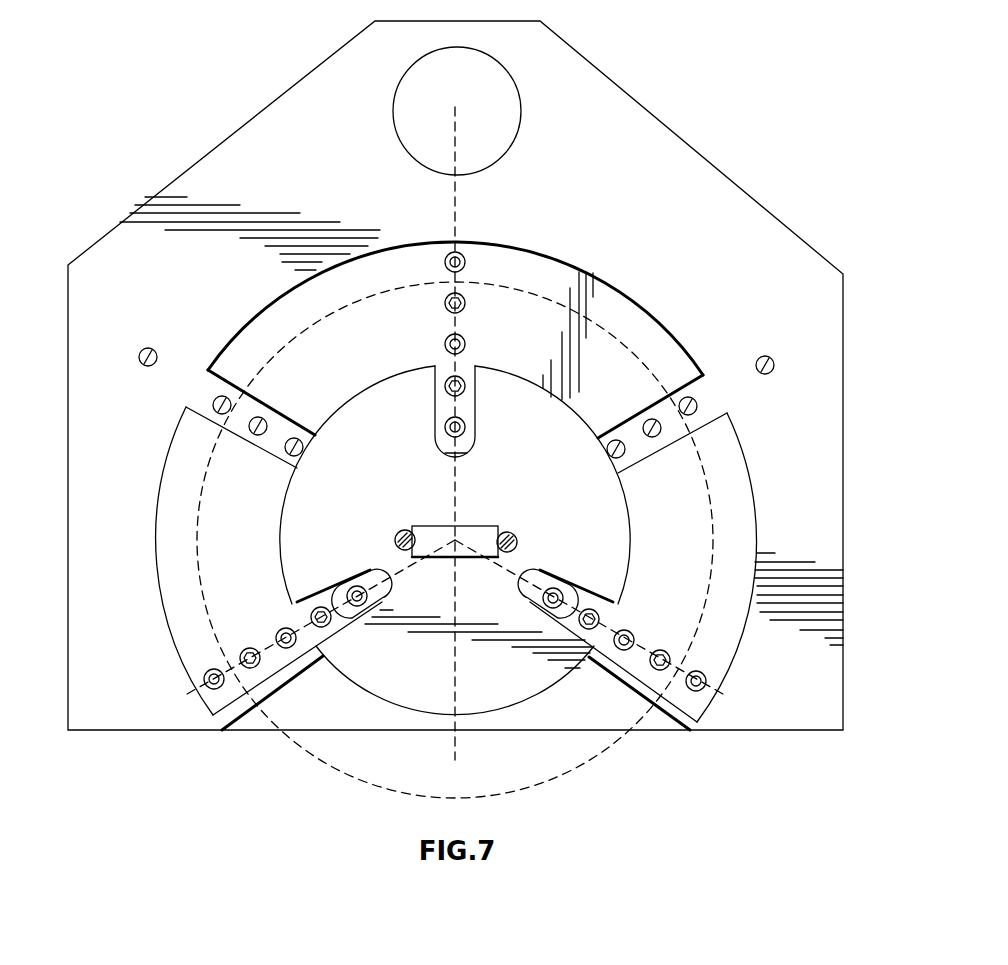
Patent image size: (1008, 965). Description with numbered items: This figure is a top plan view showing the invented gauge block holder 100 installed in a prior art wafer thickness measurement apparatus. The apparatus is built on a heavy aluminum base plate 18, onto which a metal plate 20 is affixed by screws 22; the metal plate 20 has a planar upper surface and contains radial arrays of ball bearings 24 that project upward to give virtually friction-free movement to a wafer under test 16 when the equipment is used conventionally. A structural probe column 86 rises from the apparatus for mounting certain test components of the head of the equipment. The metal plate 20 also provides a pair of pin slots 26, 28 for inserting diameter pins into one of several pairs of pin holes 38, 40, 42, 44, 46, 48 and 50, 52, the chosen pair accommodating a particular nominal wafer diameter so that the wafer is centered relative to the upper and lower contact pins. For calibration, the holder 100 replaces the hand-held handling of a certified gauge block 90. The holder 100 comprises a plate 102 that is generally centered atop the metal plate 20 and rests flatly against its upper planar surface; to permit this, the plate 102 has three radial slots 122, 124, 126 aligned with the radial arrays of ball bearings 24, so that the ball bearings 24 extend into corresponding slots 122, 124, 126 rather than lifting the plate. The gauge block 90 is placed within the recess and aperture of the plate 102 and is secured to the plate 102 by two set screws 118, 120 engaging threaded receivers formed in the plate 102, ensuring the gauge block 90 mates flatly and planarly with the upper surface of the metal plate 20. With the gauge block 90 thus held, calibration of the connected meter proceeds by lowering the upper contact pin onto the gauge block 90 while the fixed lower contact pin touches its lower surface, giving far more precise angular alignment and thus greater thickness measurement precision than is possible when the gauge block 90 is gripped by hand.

The holder 100 is at (174, 94).
The base plate 18 is at (822, 516).
The structural probe column 86 is at (399, 113).
The wafer under test 16 is at (632, 345).
The pin slot 26 is at (201, 381).
The pin slot 28 is at (673, 518).
The metal plate 20 is at (742, 496).
The plate 102 is at (520, 690).
The radial slot 124 is at (440, 449).
The radial slot 122 is at (355, 583).
The radial slot 126 is at (560, 584).
The gauge block 90 is at (437, 526).
The set screw 118 is at (400, 530).
The set screw 120 is at (512, 532).
The screws 22 is at (446, 304).
The ball bearings 24 is at (467, 254).
The pin hole 38 is at (296, 437).
The pin hole 42 is at (258, 436).
The pin hole 46 is at (212, 404).
The pin hole 40 is at (616, 439).
The pin hole 44 is at (653, 438).
The pin hole 48 is at (698, 407).
The pin hole 50 is at (147, 346).
The pin hole 52 is at (765, 354).